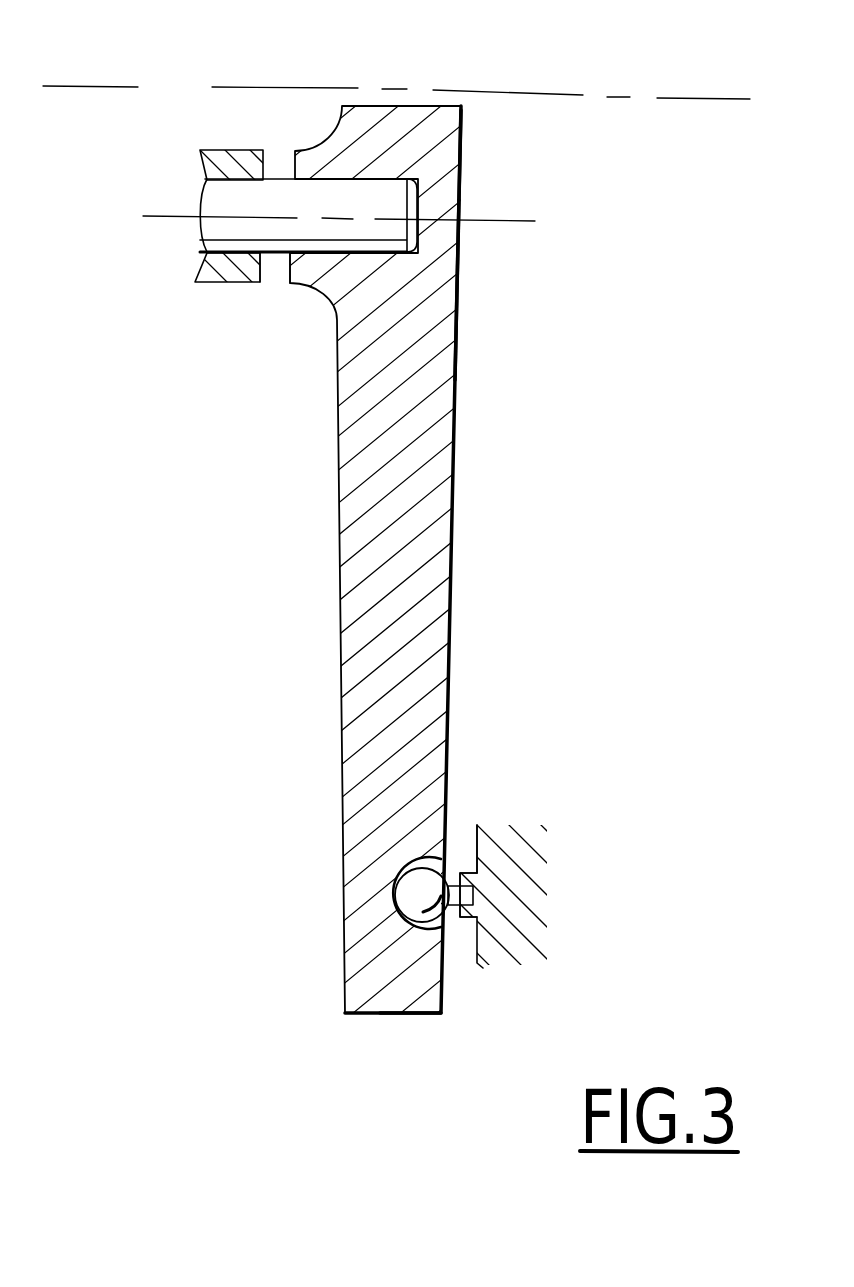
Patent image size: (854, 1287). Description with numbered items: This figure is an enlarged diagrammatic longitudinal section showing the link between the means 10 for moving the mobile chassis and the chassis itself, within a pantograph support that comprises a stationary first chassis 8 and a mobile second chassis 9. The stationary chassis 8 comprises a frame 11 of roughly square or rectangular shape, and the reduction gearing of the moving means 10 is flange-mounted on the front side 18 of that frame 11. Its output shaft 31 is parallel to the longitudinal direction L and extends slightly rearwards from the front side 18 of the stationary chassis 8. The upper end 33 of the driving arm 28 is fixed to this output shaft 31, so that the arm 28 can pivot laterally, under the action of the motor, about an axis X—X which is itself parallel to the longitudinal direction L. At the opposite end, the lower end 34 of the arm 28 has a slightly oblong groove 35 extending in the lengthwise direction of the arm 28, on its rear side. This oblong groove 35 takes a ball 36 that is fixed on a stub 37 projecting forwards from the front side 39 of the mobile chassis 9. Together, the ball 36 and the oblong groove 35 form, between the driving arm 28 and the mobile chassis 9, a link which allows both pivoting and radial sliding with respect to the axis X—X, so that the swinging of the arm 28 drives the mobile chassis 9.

The stationary first chassis 8 is at (232, 293).
The mobile second chassis 9 is at (521, 862).
The means for moving the mobile chassis 10 is at (463, 567).
The frame 11 is at (258, 290).
The front side 18 is at (227, 173).
The driving arm 28 is at (472, 418).
The output shaft 31 is at (280, 190).
The upper end 33 is at (461, 198).
The lower end 34 is at (442, 1000).
The oblong groove 35 is at (420, 932).
The ball 36 is at (413, 882).
The stub 37 is at (468, 917).
The front side 39 is at (477, 847).
The longitudinal direction L is at (187, 88).
The axis X- X is at (525, 268).